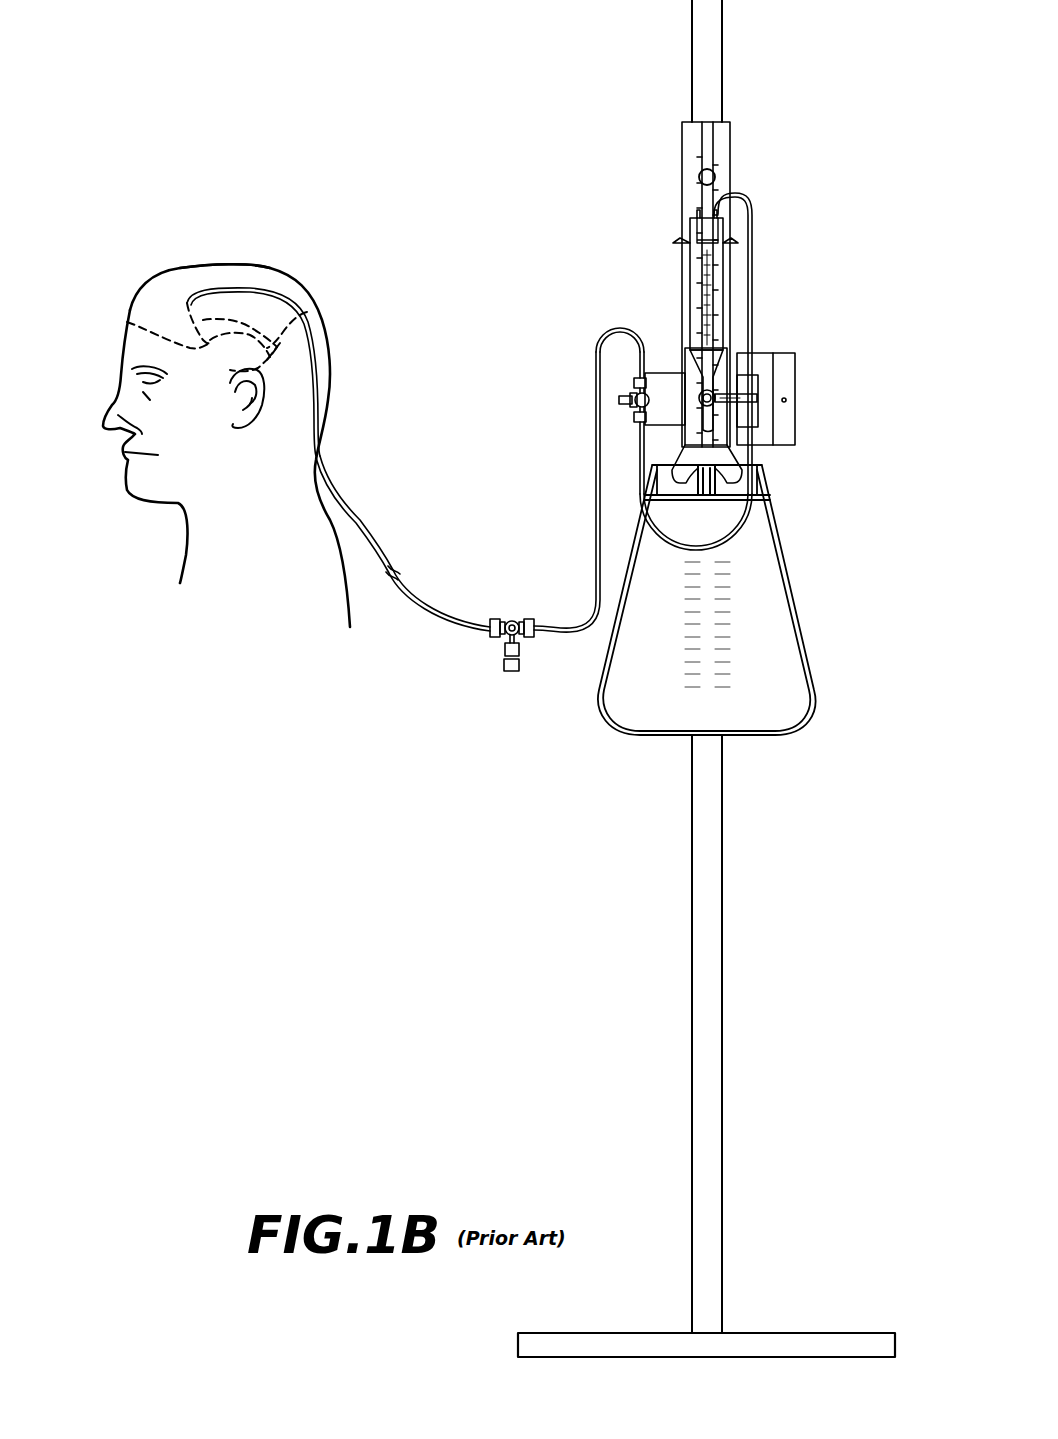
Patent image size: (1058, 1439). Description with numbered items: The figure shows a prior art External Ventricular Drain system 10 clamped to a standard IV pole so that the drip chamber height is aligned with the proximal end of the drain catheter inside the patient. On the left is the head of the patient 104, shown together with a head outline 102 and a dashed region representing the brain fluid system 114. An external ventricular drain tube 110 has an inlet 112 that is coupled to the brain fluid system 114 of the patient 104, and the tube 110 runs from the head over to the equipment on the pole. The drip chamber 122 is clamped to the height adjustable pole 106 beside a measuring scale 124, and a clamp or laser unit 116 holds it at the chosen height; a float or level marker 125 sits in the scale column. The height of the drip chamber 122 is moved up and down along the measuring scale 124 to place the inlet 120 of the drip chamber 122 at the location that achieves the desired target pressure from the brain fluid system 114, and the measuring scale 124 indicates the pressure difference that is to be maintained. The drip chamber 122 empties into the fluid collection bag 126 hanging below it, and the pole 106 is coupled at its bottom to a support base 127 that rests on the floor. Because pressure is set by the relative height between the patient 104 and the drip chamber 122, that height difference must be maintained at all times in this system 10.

The External Ventricular Drain (EVD) system 10 is at (510, 201).
The patient head 102 is at (204, 271).
The patient 104 is at (273, 255).
The height adjustable pole 106 is at (710, 33).
The external ventricular drain tube 110 is at (353, 503).
The inlet 112 is at (127, 322).
The brain fluid system 114 is at (307, 312).
The laser 116 is at (785, 383).
The inlet of the drip chamber 120 is at (700, 247).
The drip chamber 122 is at (693, 305).
The measuring scale 124 is at (688, 162).
The level indicator 125 is at (700, 180).
The fluid collection bag 126 is at (770, 600).
The support base 127 is at (850, 1340).